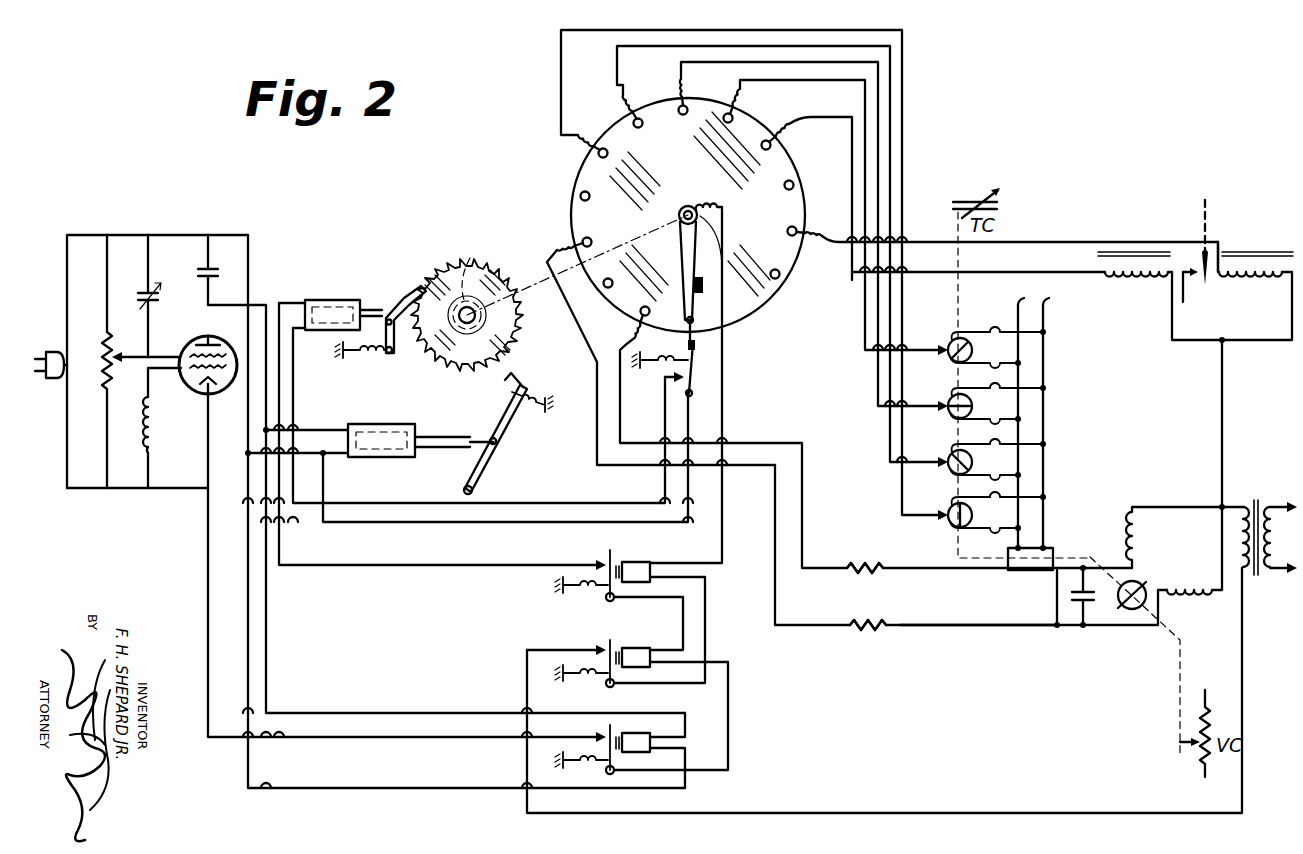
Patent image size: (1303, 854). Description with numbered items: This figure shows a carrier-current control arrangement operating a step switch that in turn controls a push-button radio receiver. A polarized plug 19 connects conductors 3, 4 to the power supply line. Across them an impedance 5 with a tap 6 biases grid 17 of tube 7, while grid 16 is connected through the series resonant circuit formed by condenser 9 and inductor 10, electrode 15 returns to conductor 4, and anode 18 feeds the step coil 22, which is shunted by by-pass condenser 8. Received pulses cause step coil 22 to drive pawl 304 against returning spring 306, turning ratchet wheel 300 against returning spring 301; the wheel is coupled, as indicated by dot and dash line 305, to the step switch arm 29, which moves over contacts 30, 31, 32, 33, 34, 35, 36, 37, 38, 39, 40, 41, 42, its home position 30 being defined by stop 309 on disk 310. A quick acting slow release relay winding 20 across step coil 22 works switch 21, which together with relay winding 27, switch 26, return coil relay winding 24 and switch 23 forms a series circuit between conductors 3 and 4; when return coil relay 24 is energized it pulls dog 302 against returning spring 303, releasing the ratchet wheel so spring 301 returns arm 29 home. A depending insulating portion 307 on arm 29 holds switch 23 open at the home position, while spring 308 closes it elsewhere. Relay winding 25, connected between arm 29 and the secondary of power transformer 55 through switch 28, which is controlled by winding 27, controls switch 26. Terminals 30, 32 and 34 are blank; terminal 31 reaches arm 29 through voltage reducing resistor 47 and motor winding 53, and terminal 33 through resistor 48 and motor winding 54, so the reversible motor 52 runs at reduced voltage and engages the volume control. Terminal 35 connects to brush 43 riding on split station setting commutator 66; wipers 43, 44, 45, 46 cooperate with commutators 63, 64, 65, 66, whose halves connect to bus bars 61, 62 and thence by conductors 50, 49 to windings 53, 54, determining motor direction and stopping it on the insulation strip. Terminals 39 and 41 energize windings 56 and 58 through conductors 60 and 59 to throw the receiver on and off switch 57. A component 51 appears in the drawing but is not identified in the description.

The conductor 3 is at (82, 236).
The conductor 4 is at (84, 490).
The impedance 5 is at (104, 343).
The tap 6 is at (117, 350).
The tube 7 is at (188, 348).
The by-pass condenser 8 is at (214, 268).
The condenser 9 is at (160, 296).
The inductor 10 is at (156, 434).
The electrode 15 is at (206, 385).
The grid 16 is at (222, 378).
The grid 17 is at (228, 345).
The anode 18 is at (199, 340).
The polarized plug 19 is at (40, 350).
The quick acting slow release relay winding 20 is at (634, 732).
The switch 21 is at (610, 730).
The step coil 22 is at (390, 424).
The switch 23 is at (694, 372).
The return coil relay winding 24 is at (337, 294).
The relay winding 25 is at (638, 562).
The switch 26 is at (610, 552).
The relay winding 27 is at (638, 648).
The switch 28 is at (610, 642).
The step switch arm 29 is at (690, 268).
The home position contact 30 is at (693, 322).
The terminal 31 is at (876, 436).
The terminal 32 is at (615, 280).
The terminal 33 is at (589, 238).
The terminal 34 is at (590, 195).
The terminal 35 is at (750, 272).
The contact 36 is at (778, 254).
The contact 37 is at (808, 234).
The contact 38 is at (831, 215).
The terminal 39 is at (926, 194).
The contact 40 is at (787, 190).
The terminal 41 is at (992, 244).
The contact 42 is at (772, 278).
The wiper or brush 43 is at (948, 510).
The wiper 44 is at (948, 457).
The wiper 45 is at (948, 401).
The wiper 46 is at (948, 345).
The voltage reducing resistor 47 is at (864, 572).
The voltage reducing resistor 48 is at (870, 628).
The conductor 49 is at (950, 627).
The conductor 50 is at (1008, 570).
The capacitor 51 is at (1076, 603).
The reversible motor 52 is at (1138, 610).
The motor winding 53 is at (1127, 526).
The motor winding 54 is at (1188, 600).
The power transformer 55 is at (1255, 500).
The winding 56 is at (1120, 278).
The on and off switch 57 is at (1194, 285).
The winding 58 is at (1258, 252).
The conductor 59 is at (1058, 240).
The conductor 60 is at (1052, 272).
The bus bar 61 is at (1022, 304).
The bus bar 62 is at (1046, 312).
The station setting commutator 63 is at (974, 350).
The station setting commutator 64 is at (974, 406).
The station setting commutator 65 is at (974, 462).
The station setting commutator 66 is at (974, 515).
The ratchet wheel 300 is at (457, 268).
The returning spring 301 is at (474, 262).
The dog 302 is at (400, 298).
The returning spring 303 is at (362, 358).
The pawl 304 is at (508, 404).
The dot and dash line 305 is at (557, 284).
The returning spring 306 is at (540, 396).
The depending portion 307 is at (688, 338).
The spring 308 is at (660, 368).
The stop 309 is at (724, 247).
The disk 310 is at (572, 190).